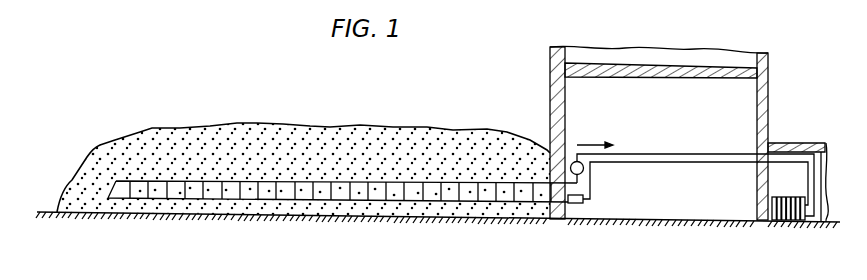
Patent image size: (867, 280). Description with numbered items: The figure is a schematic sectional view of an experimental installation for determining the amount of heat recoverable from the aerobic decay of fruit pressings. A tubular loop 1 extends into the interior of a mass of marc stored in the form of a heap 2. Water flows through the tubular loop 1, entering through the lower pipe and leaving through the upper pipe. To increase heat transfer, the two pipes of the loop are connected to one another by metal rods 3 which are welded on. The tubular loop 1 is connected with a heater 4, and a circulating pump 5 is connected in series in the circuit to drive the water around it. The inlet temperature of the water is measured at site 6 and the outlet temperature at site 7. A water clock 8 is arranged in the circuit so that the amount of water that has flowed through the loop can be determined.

The tubular loop 1 is at (291, 166).
The heap 2 is at (200, 142).
The metal rods 3 is at (363, 198).
The heater 4 is at (787, 197).
The circulating pump 5 is at (584, 169).
The inlet temperature measuring site 6 is at (549, 183).
The outlet temperature measuring site 7 is at (548, 206).
The water clock 8 is at (586, 200).